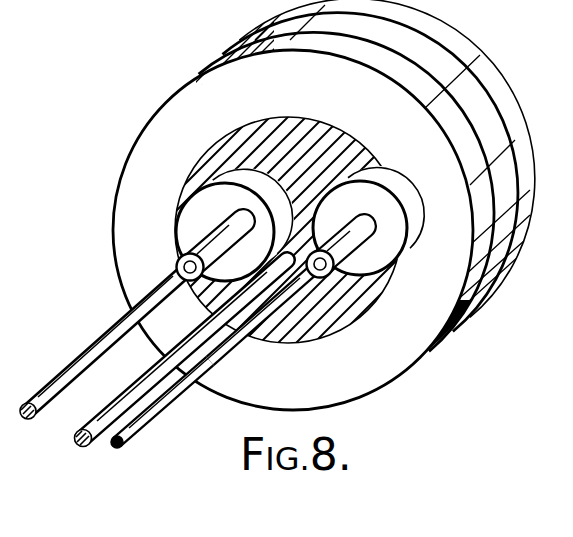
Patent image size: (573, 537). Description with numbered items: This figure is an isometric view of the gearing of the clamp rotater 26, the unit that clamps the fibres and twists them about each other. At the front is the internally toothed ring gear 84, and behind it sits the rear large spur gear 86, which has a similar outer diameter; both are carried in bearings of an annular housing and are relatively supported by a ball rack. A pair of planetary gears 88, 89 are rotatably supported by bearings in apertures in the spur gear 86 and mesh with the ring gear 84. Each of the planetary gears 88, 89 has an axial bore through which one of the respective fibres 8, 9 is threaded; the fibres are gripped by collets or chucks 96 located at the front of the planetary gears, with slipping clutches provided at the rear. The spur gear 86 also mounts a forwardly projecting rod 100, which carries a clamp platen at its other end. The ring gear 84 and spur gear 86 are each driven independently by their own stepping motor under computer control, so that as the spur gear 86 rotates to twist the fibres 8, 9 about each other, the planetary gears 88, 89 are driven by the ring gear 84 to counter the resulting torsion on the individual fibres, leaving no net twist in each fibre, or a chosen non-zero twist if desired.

The clamp rotater 26 is at (153, 97).
The front internally toothed ring gear 84 is at (407, 336).
The rear large spur gear 86 is at (312, 144).
The planetary gear 88 is at (199, 199).
The planetary gear 89 is at (387, 241).
The collet or chuck 96 is at (208, 232).
The fibre 9 is at (97, 341).
The fibre 8 is at (232, 343).
The forwardly projecting rod 100 is at (171, 401).